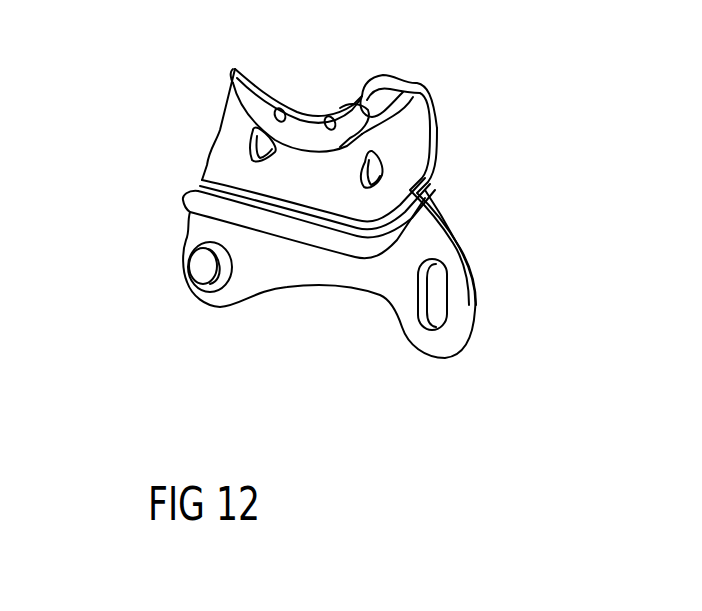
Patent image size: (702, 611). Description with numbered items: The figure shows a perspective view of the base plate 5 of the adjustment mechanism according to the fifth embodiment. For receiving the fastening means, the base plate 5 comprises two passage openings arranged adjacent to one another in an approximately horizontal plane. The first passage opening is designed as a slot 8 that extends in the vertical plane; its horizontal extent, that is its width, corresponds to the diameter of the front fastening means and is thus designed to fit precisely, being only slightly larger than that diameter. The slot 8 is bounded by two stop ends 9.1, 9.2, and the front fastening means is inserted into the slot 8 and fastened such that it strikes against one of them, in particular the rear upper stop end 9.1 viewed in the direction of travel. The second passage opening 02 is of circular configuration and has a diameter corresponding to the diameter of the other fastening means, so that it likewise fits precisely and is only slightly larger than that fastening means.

The base plate 5 is at (221, 158).
The second passage opening 02 is at (200, 270).
The rear upper stop end 9.1 is at (436, 258).
The slot 8 is at (435, 292).
The stop end 9.2 is at (435, 330).